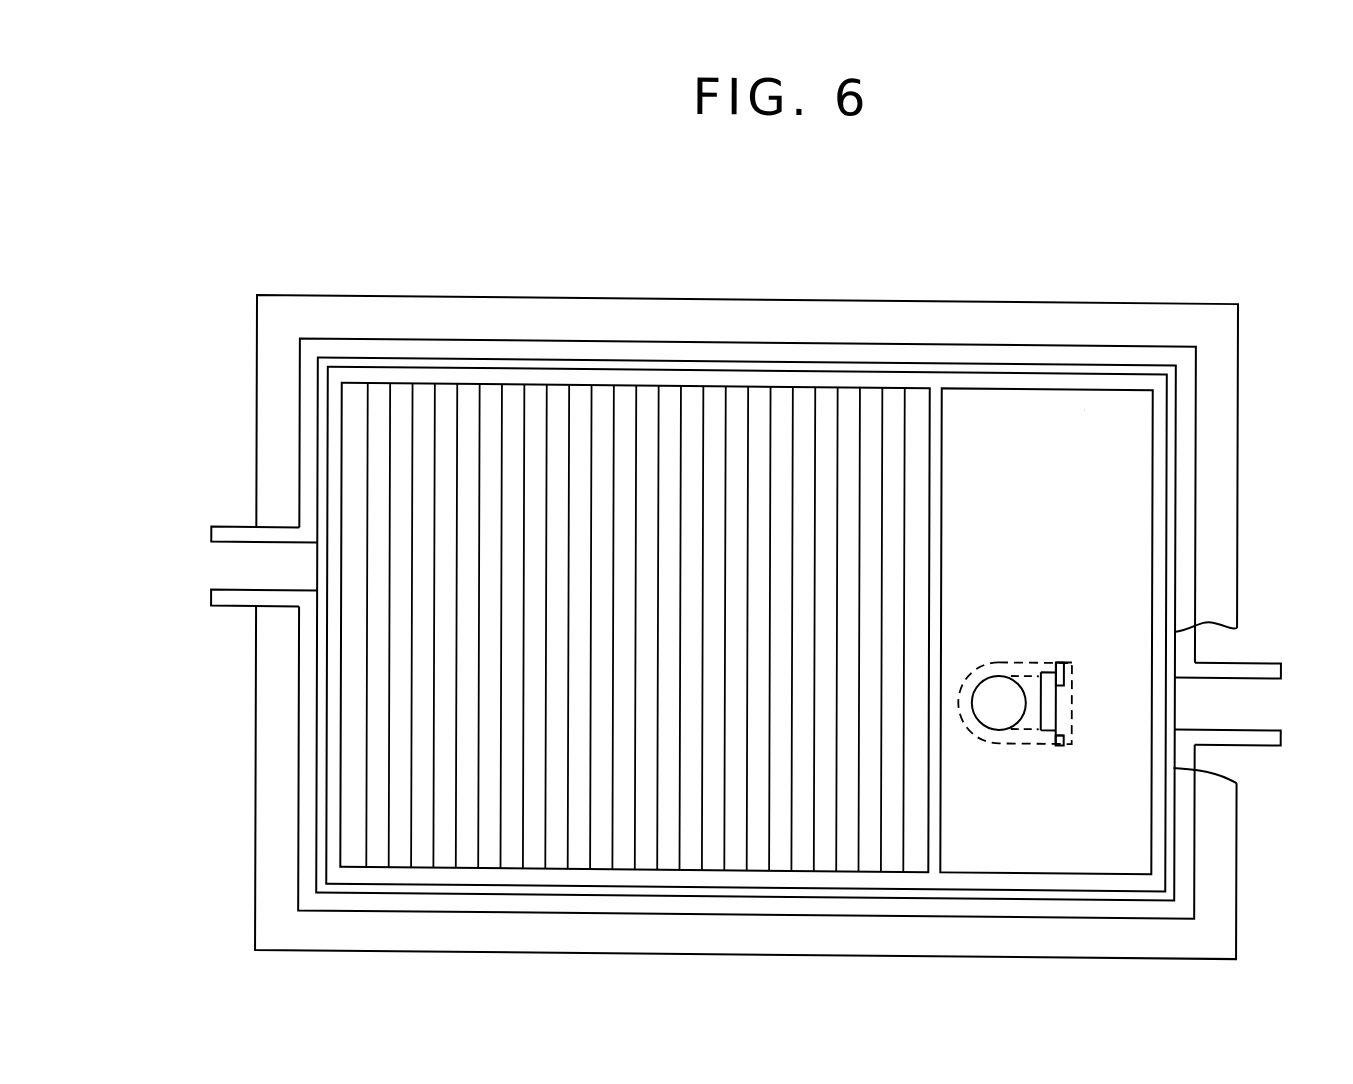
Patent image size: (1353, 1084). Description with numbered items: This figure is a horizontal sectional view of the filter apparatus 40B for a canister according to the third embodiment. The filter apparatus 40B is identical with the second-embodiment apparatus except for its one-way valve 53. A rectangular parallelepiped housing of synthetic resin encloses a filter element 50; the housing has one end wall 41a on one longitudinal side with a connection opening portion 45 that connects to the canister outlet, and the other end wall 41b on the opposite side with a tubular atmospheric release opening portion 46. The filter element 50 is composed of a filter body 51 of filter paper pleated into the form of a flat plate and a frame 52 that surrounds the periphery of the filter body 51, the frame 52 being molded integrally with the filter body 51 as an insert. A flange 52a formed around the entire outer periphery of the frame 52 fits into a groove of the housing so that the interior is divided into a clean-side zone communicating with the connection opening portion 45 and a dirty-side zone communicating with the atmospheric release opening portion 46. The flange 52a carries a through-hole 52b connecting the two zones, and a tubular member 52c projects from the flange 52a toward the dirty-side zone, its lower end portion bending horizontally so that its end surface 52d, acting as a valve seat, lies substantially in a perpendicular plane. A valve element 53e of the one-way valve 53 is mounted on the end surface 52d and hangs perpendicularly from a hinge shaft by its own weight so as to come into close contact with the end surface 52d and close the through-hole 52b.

The filter apparatus 40B is at (1220, 257).
The one end wall 41a is at (308, 405).
The other end wall 41b is at (1187, 481).
The connection opening portion 45 is at (225, 530).
The atmospheric release opening portion 46 is at (1263, 659).
The filter element 50 is at (746, 540).
The filter body 51 is at (827, 427).
The frame 52 is at (943, 434).
The flange 52a is at (1085, 402).
The through-hole 52b is at (978, 683).
The tubular member 52c is at (982, 731).
The end surface 52d is at (1065, 738).
The one-way valve 53 is at (1075, 652).
The valve element 53e is at (1068, 709).